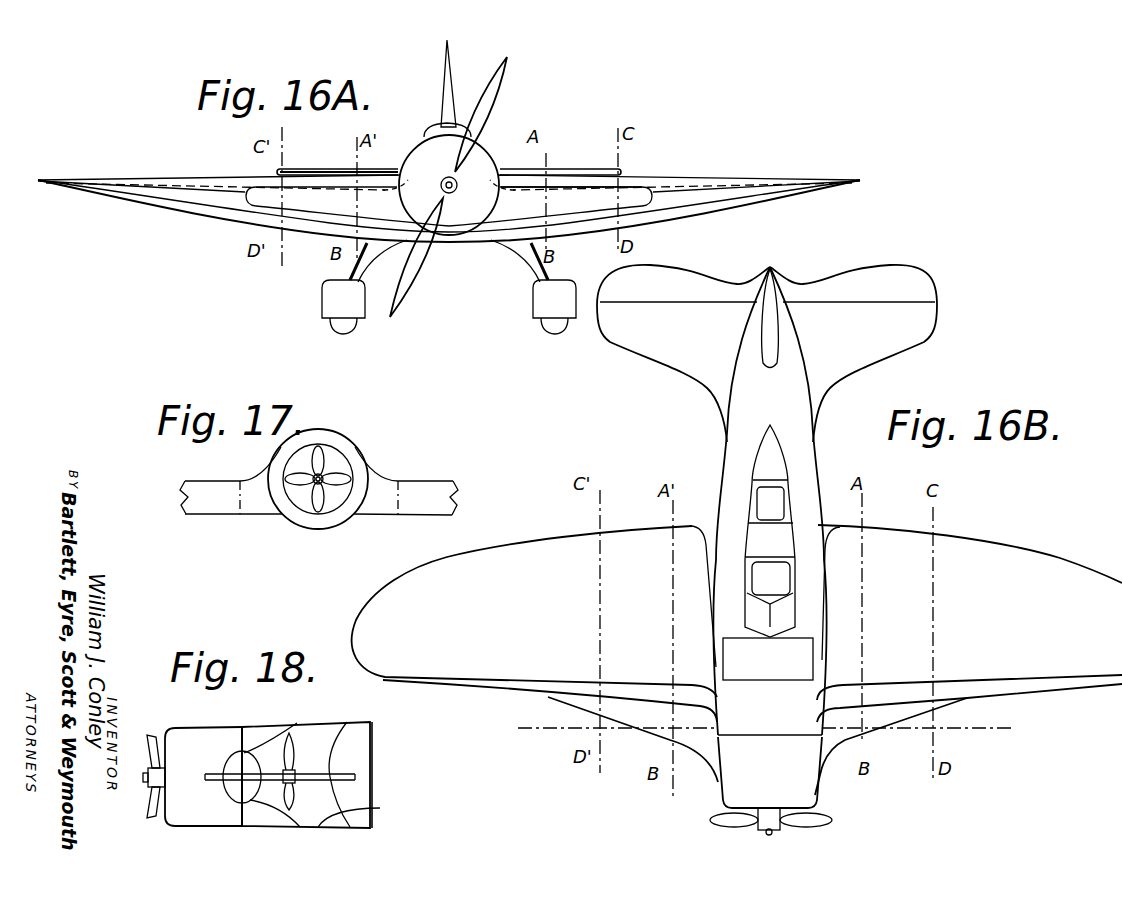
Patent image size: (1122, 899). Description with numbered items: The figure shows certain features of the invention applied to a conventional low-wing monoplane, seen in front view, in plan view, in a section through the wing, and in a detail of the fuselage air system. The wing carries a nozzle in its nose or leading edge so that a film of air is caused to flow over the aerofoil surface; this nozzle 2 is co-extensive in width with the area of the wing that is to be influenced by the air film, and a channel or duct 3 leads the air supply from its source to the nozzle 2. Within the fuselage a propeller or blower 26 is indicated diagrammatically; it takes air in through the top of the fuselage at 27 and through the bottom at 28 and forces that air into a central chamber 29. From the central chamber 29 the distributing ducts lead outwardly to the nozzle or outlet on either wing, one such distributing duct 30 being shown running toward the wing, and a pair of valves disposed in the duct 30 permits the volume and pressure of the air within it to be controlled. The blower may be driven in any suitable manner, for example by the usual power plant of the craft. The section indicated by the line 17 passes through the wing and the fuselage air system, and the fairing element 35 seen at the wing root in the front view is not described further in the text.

In FIG. 16A, the wing root fairing bar 35 is at (316, 188).
In FIG. 16A, the distributing duct 30 is at (572, 195).
In FIG. 16B, the section line 17- 17 is at (762, 731).
In FIG. 18, the central chamber 29 is at (245, 757).
In FIG. 18, the propeller or blower 26 is at (292, 740).
In FIG. 18, the top air intake 27 is at (318, 735).
In FIG. 18, the nozzle 2 is at (300, 777).
In FIG. 18, the channel or duct 3 is at (231, 776).
In FIG. 18, the bottom air intake 28 is at (380, 808).